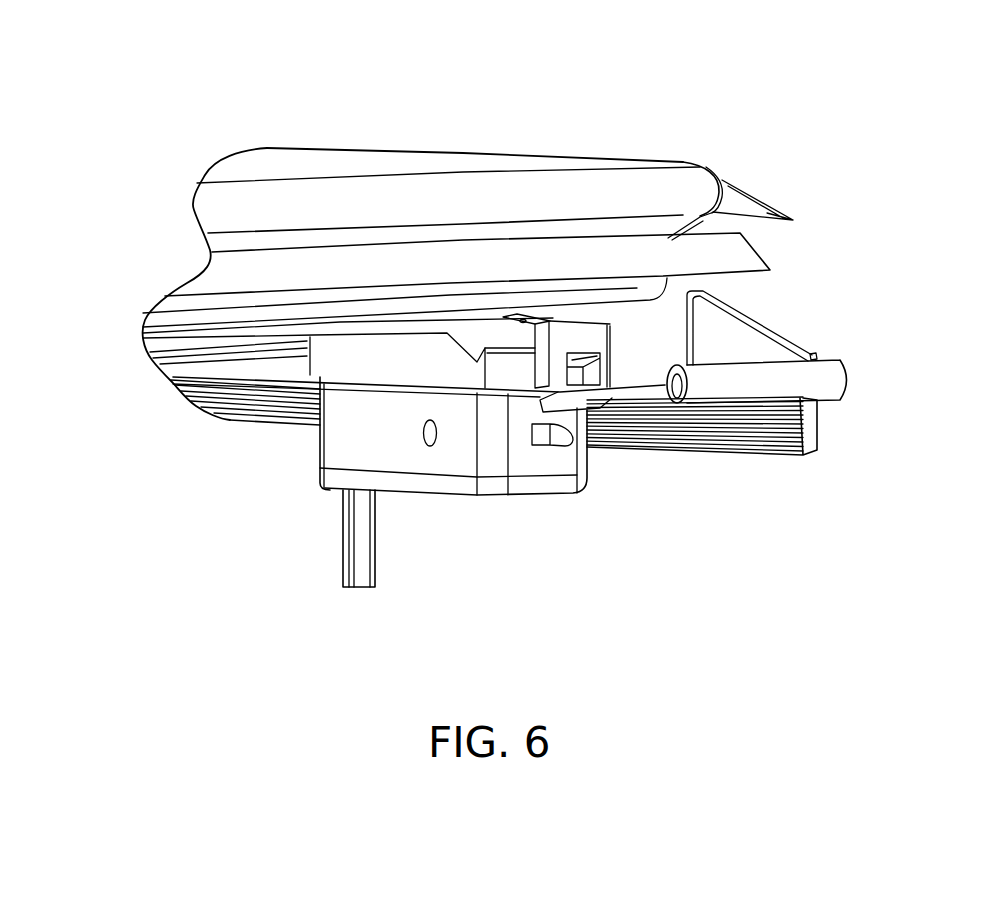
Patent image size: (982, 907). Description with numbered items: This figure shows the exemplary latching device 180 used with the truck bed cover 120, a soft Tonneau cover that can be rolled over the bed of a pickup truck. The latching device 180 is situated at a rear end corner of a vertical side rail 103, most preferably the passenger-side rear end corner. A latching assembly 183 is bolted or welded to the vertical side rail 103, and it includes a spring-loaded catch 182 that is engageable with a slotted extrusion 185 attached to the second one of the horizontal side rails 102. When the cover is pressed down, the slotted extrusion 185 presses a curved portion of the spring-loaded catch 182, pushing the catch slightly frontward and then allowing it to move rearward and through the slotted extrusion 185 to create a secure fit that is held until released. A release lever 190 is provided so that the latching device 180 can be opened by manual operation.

The latching device 180 is at (212, 82).
The truck bed cover 120 is at (373, 167).
The horizontal side rail 102 is at (630, 183).
The vertical side rail 103 is at (763, 332).
The slotted extrusion 185 is at (588, 352).
The latching assembly 183 is at (362, 441).
The spring-loaded catch 182 is at (567, 437).
The release lever 190 is at (343, 547).